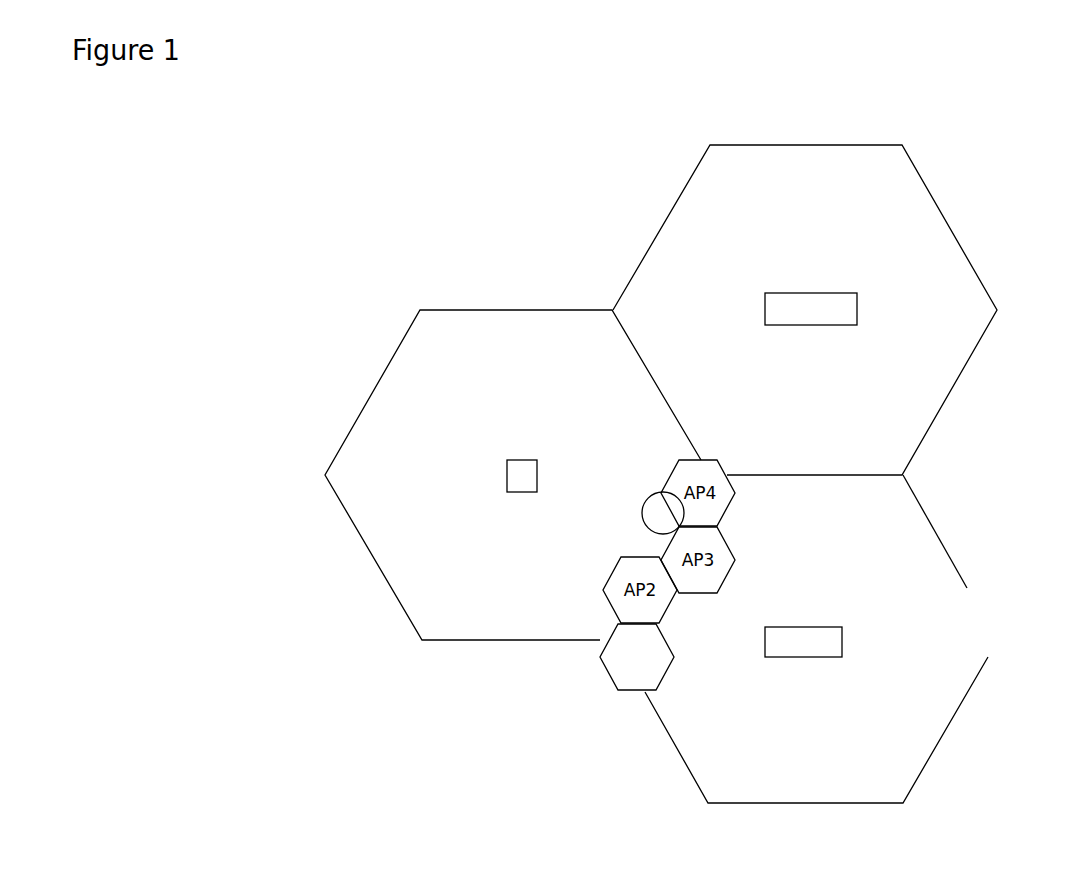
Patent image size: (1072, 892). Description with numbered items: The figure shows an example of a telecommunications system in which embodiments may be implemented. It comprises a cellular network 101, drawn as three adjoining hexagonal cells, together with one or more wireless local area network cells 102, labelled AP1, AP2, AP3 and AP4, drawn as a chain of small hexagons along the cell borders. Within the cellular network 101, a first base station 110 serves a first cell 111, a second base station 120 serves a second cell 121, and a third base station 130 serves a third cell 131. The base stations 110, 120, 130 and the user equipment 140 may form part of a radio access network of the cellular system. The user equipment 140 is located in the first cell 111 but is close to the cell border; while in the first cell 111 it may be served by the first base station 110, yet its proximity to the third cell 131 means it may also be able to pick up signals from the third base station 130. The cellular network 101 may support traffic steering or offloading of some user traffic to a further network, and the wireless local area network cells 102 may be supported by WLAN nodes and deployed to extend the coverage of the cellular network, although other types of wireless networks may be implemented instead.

The cellular network 101 is at (835, 310).
The wireless local area network cells 102 is at (617, 692).
The first base station 110 is at (513, 458).
The first cell 111 is at (360, 413).
The second base station 120 is at (833, 293).
The second cell 121 is at (967, 248).
The third base station 130 is at (817, 623).
The third cell 131 is at (960, 568).
The user equipment 140 is at (660, 492).